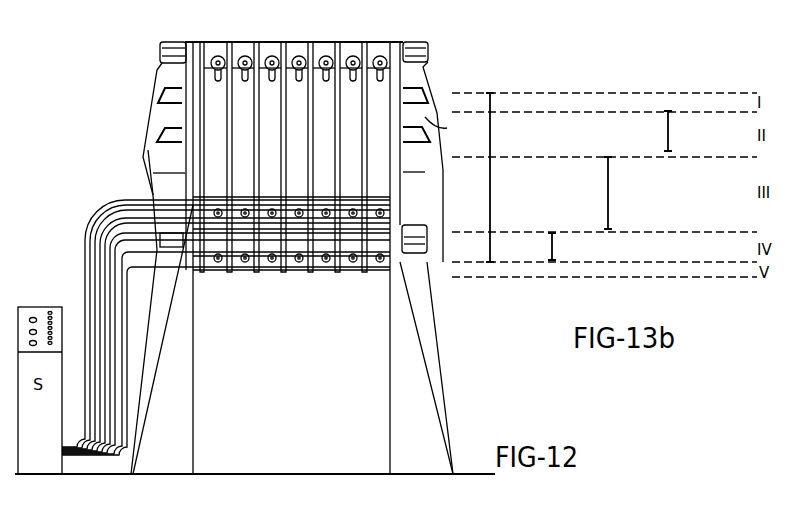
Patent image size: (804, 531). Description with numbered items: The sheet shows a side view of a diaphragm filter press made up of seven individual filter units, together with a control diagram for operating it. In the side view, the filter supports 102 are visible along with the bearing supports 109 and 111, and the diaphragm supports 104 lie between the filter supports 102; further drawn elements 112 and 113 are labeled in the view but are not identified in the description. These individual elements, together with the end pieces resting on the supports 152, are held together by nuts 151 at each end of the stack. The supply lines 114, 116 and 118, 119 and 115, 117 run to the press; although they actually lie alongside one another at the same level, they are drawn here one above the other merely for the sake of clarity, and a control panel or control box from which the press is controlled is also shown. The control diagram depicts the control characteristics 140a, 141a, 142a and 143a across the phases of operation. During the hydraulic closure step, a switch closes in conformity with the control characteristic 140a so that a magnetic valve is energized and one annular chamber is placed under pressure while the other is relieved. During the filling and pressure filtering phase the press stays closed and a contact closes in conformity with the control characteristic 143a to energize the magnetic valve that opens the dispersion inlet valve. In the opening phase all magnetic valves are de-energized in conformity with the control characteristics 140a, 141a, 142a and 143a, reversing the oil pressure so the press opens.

In FIG. 12, the filter support 102 is at (245, 118).
In FIG. 12, the diaphragm support 104 is at (200, 82).
In FIG. 12, the bearing support 109 is at (352, 45).
In FIG. 12, the bearing support 111 is at (318, 273).
In FIG. 12, the terminal screws 112 is at (245, 263).
In FIG. 12, the ring terminal 113 is at (303, 55).
In FIG. 12, the supply line 114 is at (130, 203).
In FIG. 12, the supply line 115 is at (118, 256).
In FIG. 12, the supply line 116 is at (110, 199).
In FIG. 12, the supply line 117 is at (128, 278).
In FIG. 12, the supply line 118 is at (110, 222).
In FIG. 12, the supply line 119 is at (118, 240).
In FIG. 12, the nut 151 is at (415, 52).
In FIG. 12, the support 152 is at (425, 333).
In FIG. 13B, the control characteristic 140a is at (491, 166).
In FIG. 13B, the control characteristic 141a is at (551, 165).
In FIG. 13B, the control characteristic 142a is at (619, 150).
In FIG. 13B, the control characteristic 143a is at (679, 111).